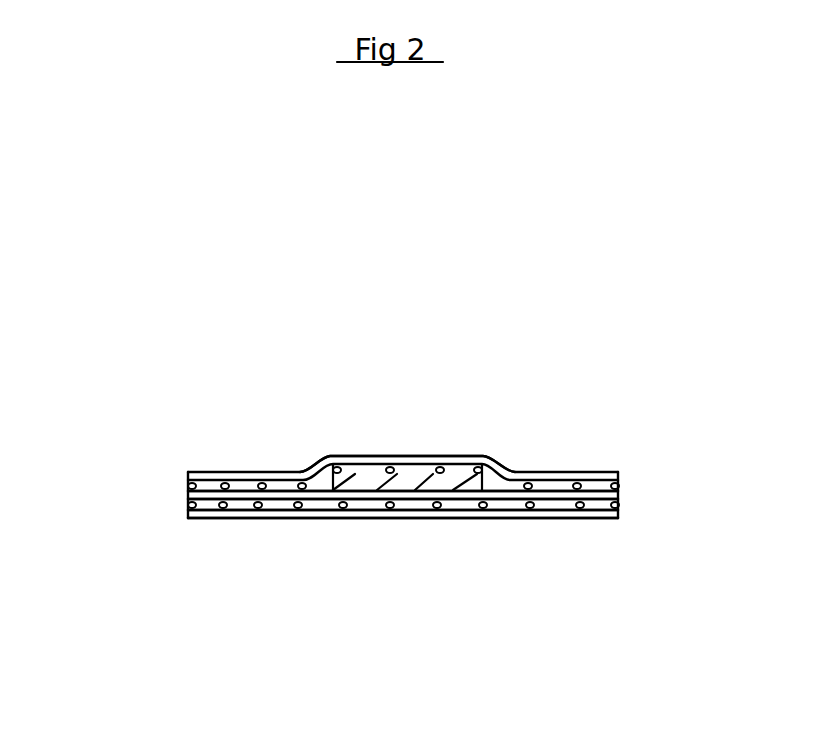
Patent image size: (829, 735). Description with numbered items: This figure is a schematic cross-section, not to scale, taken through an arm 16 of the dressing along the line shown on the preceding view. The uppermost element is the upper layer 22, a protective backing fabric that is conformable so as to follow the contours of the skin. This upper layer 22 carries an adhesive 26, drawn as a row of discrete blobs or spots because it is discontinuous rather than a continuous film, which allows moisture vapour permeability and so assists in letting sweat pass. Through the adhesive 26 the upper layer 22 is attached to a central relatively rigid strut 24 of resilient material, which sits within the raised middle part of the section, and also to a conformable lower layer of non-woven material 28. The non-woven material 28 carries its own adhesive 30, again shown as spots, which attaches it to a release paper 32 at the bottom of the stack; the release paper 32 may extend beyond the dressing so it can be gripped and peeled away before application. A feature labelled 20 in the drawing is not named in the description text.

The arm 16 is at (278, 563).
The raised pocket portion 20 is at (378, 472).
The upper layer 22 is at (583, 478).
The central relatively rigid strut 24 is at (453, 472).
The adhesive 26 is at (190, 486).
The non-woven material 28 is at (618, 495).
The adhesive 30 is at (190, 505).
The release paper 32 is at (618, 517).